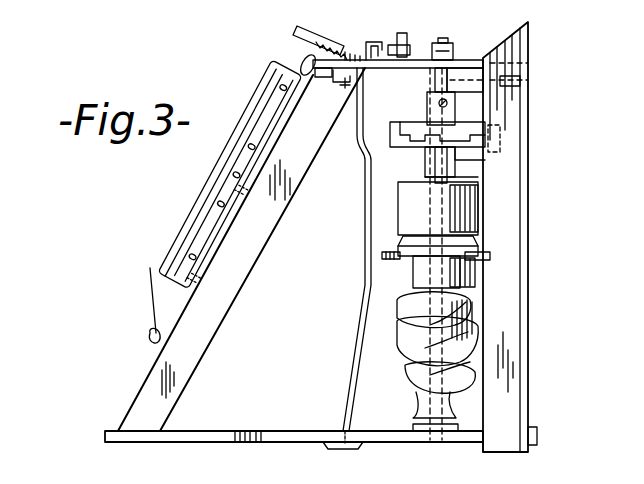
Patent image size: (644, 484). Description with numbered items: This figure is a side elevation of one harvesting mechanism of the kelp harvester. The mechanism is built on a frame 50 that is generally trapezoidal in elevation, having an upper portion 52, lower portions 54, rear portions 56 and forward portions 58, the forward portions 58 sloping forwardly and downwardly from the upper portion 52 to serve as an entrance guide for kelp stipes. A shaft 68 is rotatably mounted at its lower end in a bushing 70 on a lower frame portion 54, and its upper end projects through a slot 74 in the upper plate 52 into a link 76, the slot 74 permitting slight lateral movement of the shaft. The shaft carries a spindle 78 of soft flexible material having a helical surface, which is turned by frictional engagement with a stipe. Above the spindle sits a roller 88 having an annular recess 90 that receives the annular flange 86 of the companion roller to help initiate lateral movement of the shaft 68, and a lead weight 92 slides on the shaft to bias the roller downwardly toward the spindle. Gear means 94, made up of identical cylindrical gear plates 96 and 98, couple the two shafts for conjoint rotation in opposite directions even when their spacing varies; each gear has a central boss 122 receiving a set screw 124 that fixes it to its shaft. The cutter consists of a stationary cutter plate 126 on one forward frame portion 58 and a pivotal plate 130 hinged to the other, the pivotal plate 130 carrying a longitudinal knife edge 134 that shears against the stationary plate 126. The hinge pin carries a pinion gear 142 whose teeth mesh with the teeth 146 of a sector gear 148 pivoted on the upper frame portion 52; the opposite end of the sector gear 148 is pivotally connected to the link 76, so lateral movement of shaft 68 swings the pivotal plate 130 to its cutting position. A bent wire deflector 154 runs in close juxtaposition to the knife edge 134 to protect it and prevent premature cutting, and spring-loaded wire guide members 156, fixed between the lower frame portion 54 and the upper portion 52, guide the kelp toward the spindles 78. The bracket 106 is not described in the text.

The frame 50 is at (457, 449).
The upper portion 52 is at (477, 60).
The lower portions 54 is at (214, 430).
The rear portions 56 is at (507, 206).
The forward portions 58 is at (195, 340).
The shaft 68 is at (455, 176).
The bushing 70 is at (414, 428).
The slot 74 is at (528, 81).
The link 76 is at (447, 44).
The spindle 78 is at (405, 307).
The annular flange 86 is at (428, 255).
The roller 88 is at (478, 275).
The annular recess 90 is at (466, 270).
The lead weights 92 is at (407, 205).
The gear means 94 is at (388, 111).
The cylindrical plate 96 is at (411, 154).
The cylindrical plate 98 is at (427, 117).
The bracket 106 is at (468, 153).
The central boss 122 is at (452, 122).
The set screw 124 is at (452, 118).
The stationary cutter plate 126 is at (222, 233).
The pivotal plate 130 is at (312, 159).
The knife edge 134 is at (200, 196).
The pinion gear 142 is at (297, 38).
The teeth 146 is at (353, 47).
The sector gear 148 is at (415, 57).
The deflector 154 is at (252, 101).
The guide members 156 is at (346, 400).